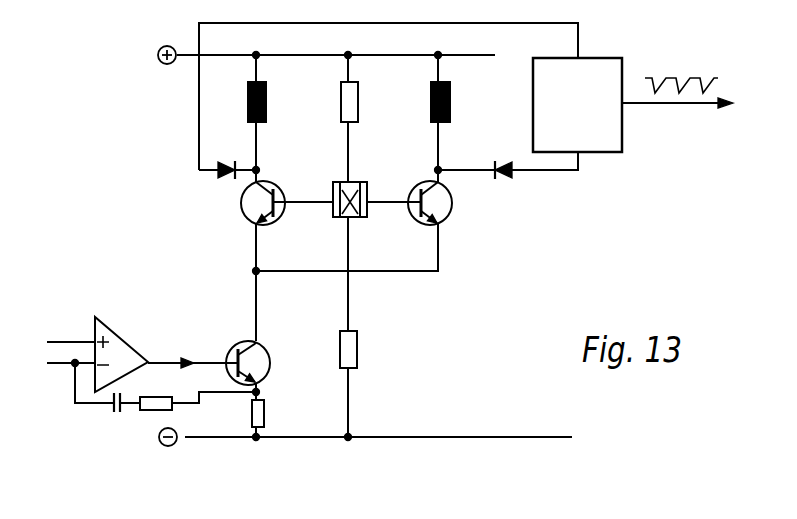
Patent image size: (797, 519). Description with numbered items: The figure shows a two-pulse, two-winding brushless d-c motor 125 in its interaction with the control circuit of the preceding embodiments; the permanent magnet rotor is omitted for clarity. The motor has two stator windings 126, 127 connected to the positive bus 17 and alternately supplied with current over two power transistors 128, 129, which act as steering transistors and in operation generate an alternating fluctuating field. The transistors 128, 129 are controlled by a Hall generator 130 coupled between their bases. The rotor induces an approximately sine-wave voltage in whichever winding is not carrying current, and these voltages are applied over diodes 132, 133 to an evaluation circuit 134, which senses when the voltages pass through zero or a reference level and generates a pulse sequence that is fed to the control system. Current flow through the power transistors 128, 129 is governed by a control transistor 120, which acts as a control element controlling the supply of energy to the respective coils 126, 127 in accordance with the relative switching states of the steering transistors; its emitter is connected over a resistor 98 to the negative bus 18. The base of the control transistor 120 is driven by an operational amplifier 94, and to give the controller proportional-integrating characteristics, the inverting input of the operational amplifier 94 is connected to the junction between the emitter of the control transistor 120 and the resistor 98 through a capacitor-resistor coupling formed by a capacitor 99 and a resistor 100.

The positive bus 17 is at (388, 55).
The negative bus 18 is at (410, 437).
The operational amplifier 94 is at (125, 338).
The resistor 98 is at (267, 413).
The capacitor 99 is at (115, 415).
The resistor 100 is at (157, 405).
The control transistor 120 is at (266, 352).
The two-pulse, two-winding brushless d-c motor 125 is at (313, 150).
The stator winding 126 is at (267, 95).
The stator winding 127 is at (450, 95).
The power transistor 128 is at (250, 207).
The power transistor 129 is at (443, 211).
The Hall generator 130 is at (358, 182).
The diode 132 is at (218, 173).
The diode 133 is at (513, 178).
The evaluation circuit 134 is at (589, 123).